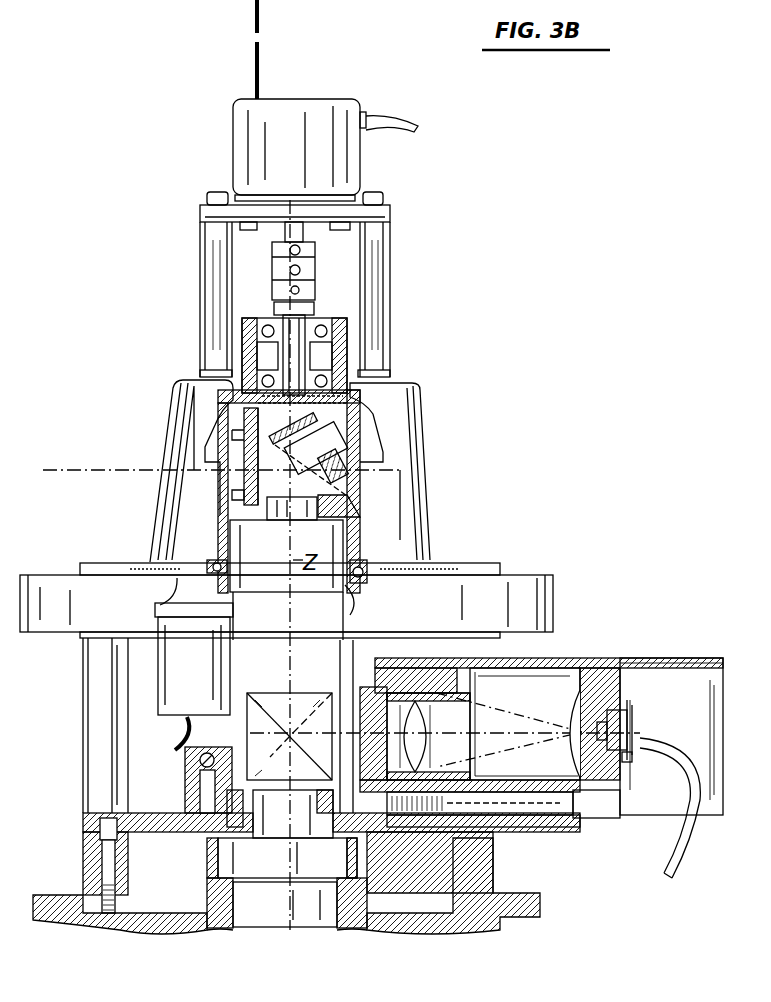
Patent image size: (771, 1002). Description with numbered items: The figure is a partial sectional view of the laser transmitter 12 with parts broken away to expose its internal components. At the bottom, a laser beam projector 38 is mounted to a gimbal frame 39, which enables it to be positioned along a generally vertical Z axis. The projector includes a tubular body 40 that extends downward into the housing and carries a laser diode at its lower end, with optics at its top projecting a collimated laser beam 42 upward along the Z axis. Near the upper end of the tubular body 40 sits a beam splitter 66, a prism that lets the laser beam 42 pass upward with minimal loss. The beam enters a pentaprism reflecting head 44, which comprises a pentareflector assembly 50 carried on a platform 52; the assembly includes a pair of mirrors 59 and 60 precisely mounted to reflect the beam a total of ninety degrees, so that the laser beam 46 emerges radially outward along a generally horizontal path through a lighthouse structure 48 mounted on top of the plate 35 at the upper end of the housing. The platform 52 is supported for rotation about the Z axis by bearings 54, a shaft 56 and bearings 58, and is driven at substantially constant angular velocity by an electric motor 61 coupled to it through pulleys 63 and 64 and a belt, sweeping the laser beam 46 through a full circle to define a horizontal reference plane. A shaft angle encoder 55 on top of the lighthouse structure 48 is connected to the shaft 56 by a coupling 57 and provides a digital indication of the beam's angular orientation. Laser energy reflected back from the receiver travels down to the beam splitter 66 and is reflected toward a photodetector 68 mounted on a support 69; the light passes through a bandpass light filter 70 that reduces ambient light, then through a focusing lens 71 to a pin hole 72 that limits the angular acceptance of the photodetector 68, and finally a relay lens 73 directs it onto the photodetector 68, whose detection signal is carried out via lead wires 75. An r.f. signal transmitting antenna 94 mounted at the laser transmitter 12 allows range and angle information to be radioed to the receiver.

The laser transmitter 12 is at (505, 352).
The plate 35 is at (523, 583).
The laser beam projector 38 is at (333, 863).
The gimbal frame 39 is at (483, 912).
The tubular body 40 is at (287, 917).
The laser beam 42 is at (290, 810).
The pentaprism reflecting head 44 is at (360, 481).
The laser beam 46 is at (98, 468).
The lighthouse structure 48 is at (420, 472).
The pentareflector assembly 50 is at (323, 440).
The platform 52 is at (350, 541).
The bearings 54 is at (213, 562).
The shaft angle encoder 55 is at (245, 140).
The shaft 56 is at (325, 370).
The coupling 57 is at (305, 273).
The bearings 58 is at (345, 325).
The mirror 59 is at (355, 407).
The mirror 60 is at (343, 501).
The electric motor 61 is at (175, 688).
The pulley 63 is at (180, 563).
The pulley 64 is at (355, 600).
The beam splitter 66 is at (302, 702).
The photodetector 68 is at (623, 722).
The support 69 is at (593, 818).
The bandpass light filter 70 is at (373, 827).
The focusing lens 71 is at (455, 668).
The pin hole 72 is at (600, 665).
The relay lens 73 is at (637, 754).
The lead wires 75 is at (677, 855).
The r.f. signal transmitting antenna 94 is at (262, 14).